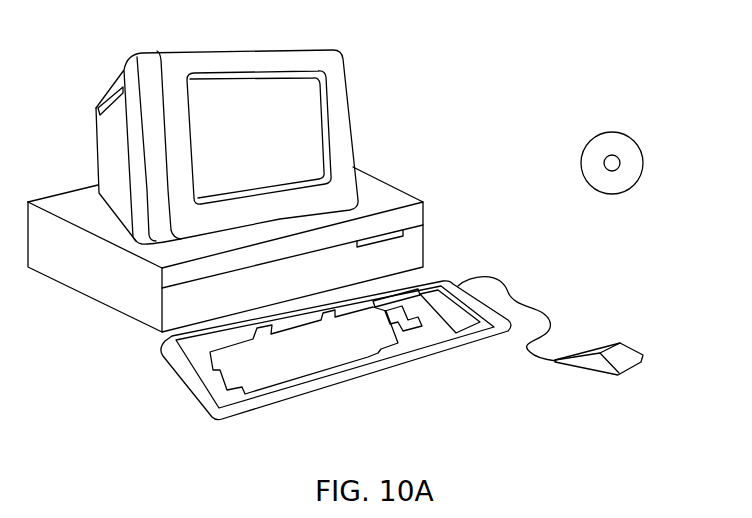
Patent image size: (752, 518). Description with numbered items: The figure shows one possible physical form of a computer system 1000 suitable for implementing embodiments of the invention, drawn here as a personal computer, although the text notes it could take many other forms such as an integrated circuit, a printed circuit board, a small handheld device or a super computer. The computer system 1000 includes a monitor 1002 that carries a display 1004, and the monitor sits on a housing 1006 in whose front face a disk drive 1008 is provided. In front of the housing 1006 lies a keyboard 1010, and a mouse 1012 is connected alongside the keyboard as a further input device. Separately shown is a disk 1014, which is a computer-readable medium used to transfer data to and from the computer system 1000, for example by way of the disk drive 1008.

The computer system 1000 is at (537, 32).
The monitor 1002 is at (353, 153).
The display 1004 is at (315, 106).
The housing 1006 is at (110, 314).
The disk drive 1008 is at (408, 226).
The keyboard 1010 is at (338, 378).
The mouse 1012 is at (658, 347).
The disk 1014 is at (627, 136).